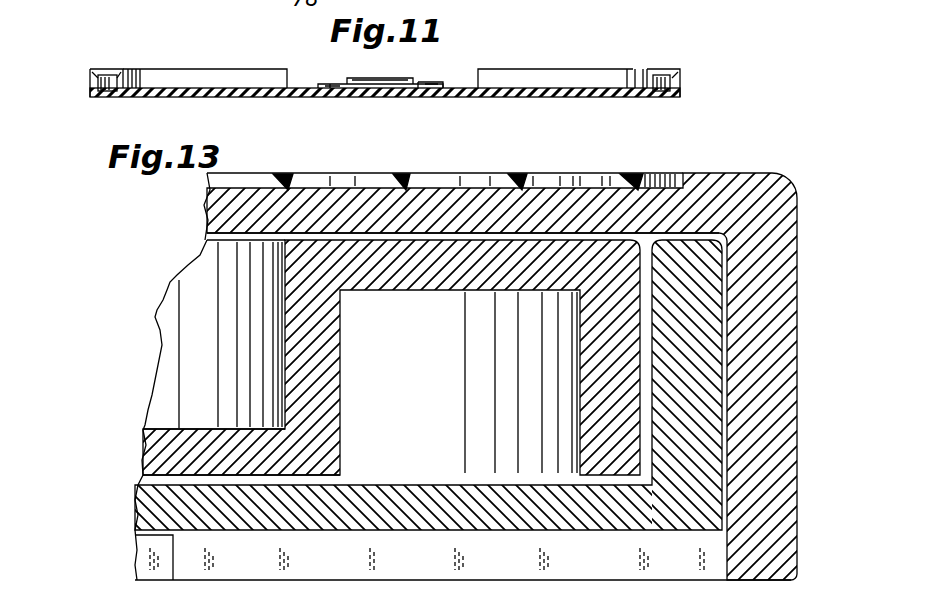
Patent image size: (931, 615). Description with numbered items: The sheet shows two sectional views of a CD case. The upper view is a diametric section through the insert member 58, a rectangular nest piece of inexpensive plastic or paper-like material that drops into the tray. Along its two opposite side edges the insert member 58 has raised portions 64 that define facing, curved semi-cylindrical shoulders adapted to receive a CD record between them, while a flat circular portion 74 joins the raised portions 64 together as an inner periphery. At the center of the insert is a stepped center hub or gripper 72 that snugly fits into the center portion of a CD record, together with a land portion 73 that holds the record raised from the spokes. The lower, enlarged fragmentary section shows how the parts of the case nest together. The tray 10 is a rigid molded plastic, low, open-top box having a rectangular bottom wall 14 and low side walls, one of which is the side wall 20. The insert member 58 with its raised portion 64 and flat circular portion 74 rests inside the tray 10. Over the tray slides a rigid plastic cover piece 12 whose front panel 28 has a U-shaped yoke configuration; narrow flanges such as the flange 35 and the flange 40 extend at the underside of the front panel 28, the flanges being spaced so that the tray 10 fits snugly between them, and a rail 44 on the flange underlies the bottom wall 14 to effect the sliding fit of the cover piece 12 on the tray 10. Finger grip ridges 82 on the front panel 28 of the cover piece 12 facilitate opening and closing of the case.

In FIG. 13, the tray 10 is at (130, 491).
In FIG. 13, the cover piece 12 is at (747, 160).
In FIG. 13, the bottom wall 14 is at (145, 510).
In FIG. 13, the side wall 20 is at (800, 292).
In FIG. 13, the front panel 28 is at (207, 207).
In FIG. 13, the flange 35 is at (765, 370).
In FIG. 13, the flange 40 is at (463, 557).
In FIG. 13, the rail 44 is at (142, 556).
In FIG. 11, the insert member 58 is at (233, 57).
In FIG. 13, the insert member 58 is at (150, 318).
In FIG. 11, the raised portion 64 is at (178, 72).
In FIG. 13, the raised portion 64 is at (410, 268).
In FIG. 11, the center hub 72 is at (375, 82).
In FIG. 11, the land portion 73 is at (432, 84).
In FIG. 11, the flat circular portion 74 is at (530, 86).
In FIG. 13, the flat circular portion 74 is at (150, 450).
In FIG. 13, the finger grip ridge 82 is at (284, 188).